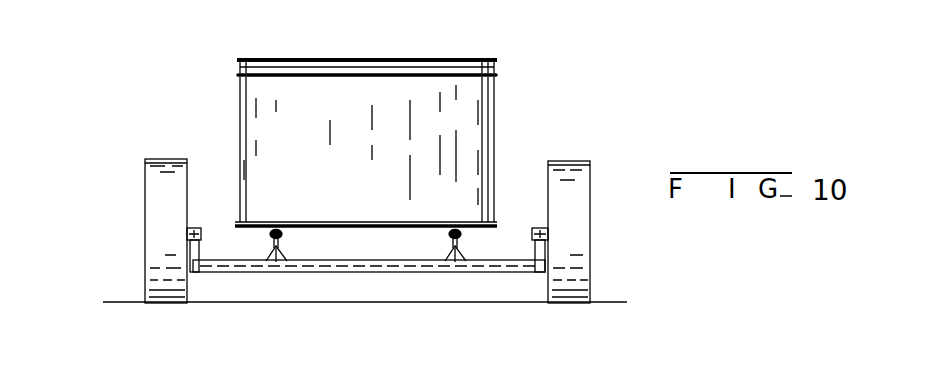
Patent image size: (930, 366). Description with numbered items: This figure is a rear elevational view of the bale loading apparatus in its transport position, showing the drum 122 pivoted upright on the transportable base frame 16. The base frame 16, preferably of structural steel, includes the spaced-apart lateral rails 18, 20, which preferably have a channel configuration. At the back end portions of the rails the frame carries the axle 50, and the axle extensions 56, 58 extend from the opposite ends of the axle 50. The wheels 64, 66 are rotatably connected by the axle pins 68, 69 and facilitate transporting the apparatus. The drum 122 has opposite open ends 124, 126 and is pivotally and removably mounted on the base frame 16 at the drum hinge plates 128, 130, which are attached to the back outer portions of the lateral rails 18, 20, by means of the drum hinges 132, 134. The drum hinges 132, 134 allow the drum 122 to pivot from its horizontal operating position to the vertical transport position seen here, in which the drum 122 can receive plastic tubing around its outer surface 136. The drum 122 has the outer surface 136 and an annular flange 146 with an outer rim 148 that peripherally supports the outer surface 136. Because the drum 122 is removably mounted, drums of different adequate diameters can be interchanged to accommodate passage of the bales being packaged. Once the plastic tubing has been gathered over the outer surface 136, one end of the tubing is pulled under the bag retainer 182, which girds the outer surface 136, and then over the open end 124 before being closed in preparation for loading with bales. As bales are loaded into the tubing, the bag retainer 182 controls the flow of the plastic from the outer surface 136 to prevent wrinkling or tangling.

The transportable base frame 16 is at (596, 247).
The lateral rail 18 is at (445, 284).
The lateral rail 20 is at (274, 284).
The axle 50 is at (355, 268).
The axle extension 56 is at (543, 273).
The axle extension 58 is at (195, 268).
The wheel 64 is at (582, 178).
The wheel 66 is at (157, 172).
The axle pin 68 is at (538, 236).
The axle pin 69 is at (193, 226).
The drum 122 is at (368, 190).
The open end 124 is at (447, 59).
The open end 126 is at (480, 239).
The drum hinge plate 128 is at (460, 249).
The drum hinge plate 130 is at (271, 242).
The drum hinge 132 is at (449, 237).
The drum hinge 134 is at (303, 249).
The outer surface 136 is at (495, 126).
The annular flange 146 is at (499, 74).
The outer rim 148 is at (499, 61).
The bag retainer 182 is at (237, 73).